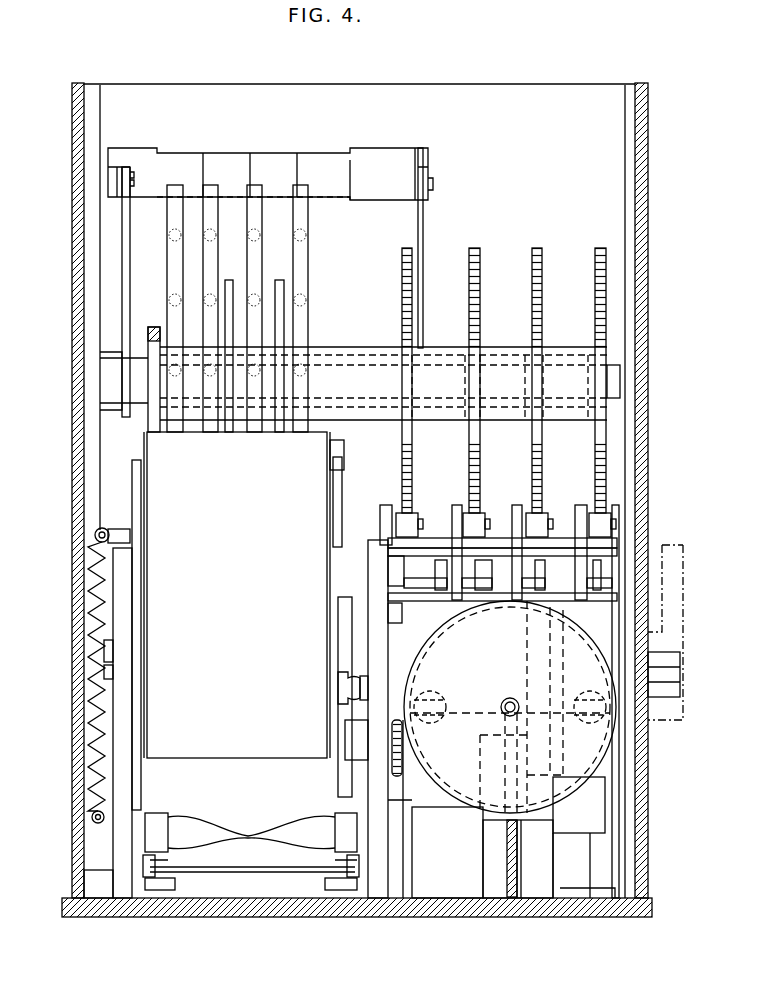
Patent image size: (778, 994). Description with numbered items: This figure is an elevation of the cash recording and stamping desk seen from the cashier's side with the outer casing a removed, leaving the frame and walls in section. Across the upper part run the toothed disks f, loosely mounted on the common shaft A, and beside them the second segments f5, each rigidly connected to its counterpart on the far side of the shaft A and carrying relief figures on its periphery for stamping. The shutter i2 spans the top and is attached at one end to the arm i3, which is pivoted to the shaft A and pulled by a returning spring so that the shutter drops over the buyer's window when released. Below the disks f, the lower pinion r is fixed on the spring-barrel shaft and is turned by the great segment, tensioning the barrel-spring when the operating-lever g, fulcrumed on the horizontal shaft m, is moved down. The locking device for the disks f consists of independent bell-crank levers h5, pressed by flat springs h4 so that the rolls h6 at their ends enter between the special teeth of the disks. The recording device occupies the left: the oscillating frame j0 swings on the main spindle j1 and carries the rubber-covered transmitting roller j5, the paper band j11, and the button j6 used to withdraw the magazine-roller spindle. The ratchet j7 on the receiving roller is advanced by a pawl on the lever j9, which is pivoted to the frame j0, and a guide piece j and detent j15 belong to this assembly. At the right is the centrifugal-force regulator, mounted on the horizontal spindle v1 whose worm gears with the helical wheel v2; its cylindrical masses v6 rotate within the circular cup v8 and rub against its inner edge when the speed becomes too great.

The casing a is at (76, 296).
The common shaft A is at (102, 372).
The shutter i2 is at (363, 146).
The arm i3 is at (130, 290).
The second segment f5 is at (178, 178).
The toothed disk f is at (401, 292).
The lower pinion r is at (426, 262).
The transmitting roller j5 is at (360, 443).
The paper band j11 is at (237, 595).
The spring lever j is at (88, 570).
The oscillating frame j0 is at (352, 738).
The detent j15 is at (103, 660).
The main spindle j1 is at (394, 614).
The roll h6 is at (407, 526).
The bell-crank lever h5 is at (386, 505).
The flat spring h4 is at (598, 592).
The circular cup v8 is at (510, 707).
The cylindrical mass v6 is at (458, 692).
The horizontal spindle v1 is at (520, 702).
The operating-lever g is at (665, 632).
The horizontal shaft m is at (664, 674).
The ratchet j7 is at (338, 686).
The button j6 is at (410, 755).
The lever j9 is at (251, 851).
The helical wheel v2 is at (508, 878).